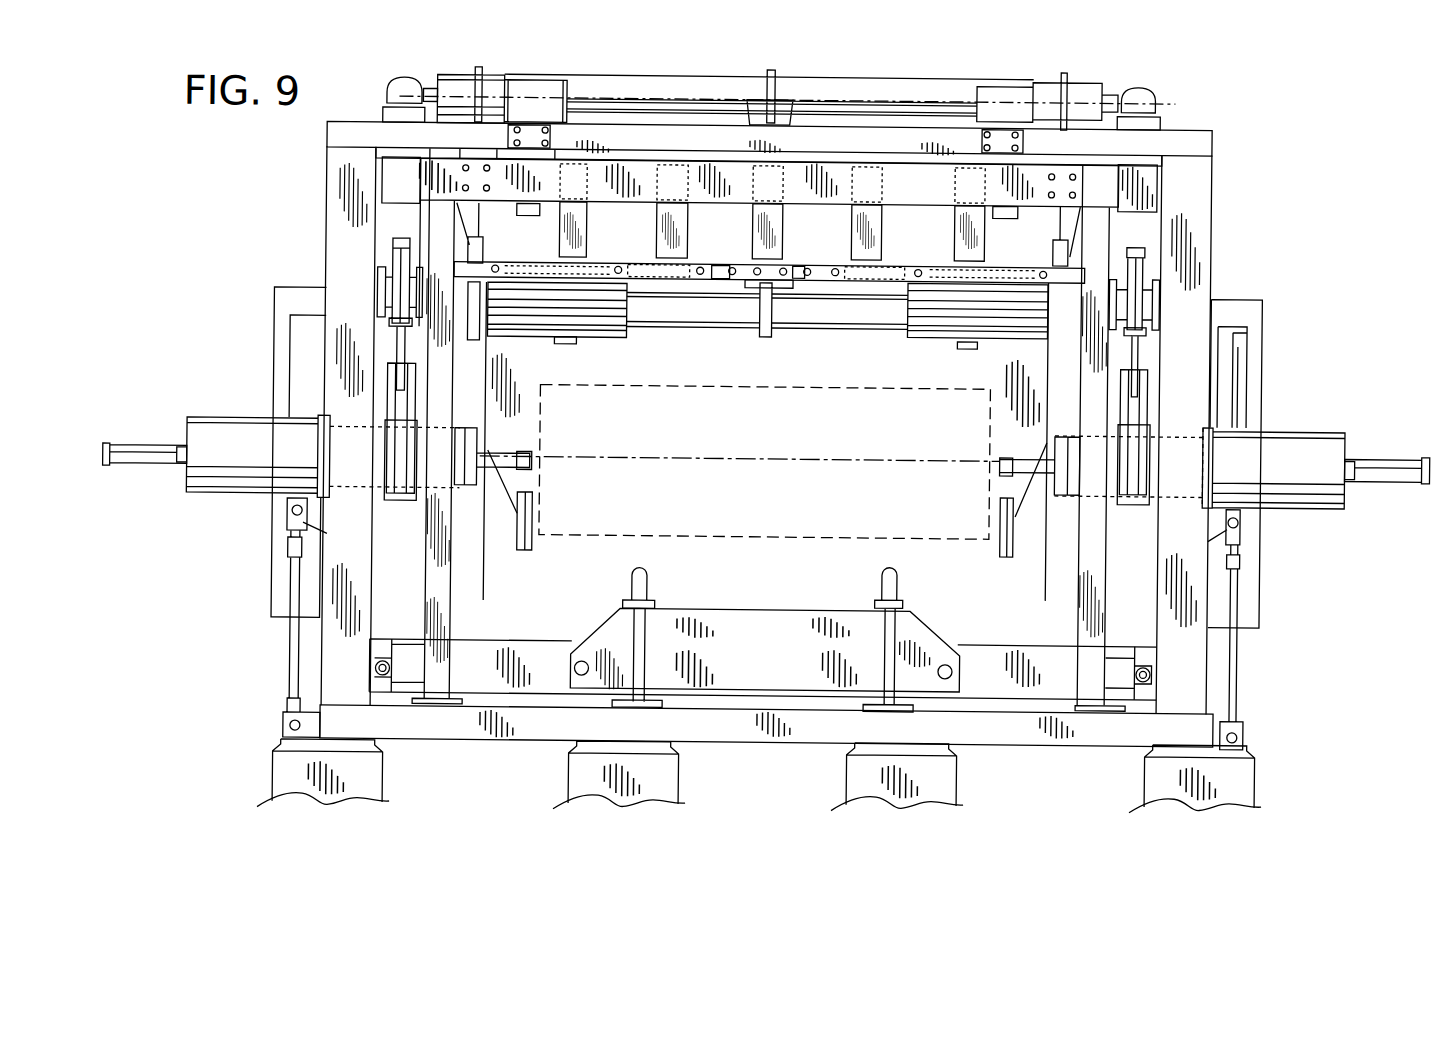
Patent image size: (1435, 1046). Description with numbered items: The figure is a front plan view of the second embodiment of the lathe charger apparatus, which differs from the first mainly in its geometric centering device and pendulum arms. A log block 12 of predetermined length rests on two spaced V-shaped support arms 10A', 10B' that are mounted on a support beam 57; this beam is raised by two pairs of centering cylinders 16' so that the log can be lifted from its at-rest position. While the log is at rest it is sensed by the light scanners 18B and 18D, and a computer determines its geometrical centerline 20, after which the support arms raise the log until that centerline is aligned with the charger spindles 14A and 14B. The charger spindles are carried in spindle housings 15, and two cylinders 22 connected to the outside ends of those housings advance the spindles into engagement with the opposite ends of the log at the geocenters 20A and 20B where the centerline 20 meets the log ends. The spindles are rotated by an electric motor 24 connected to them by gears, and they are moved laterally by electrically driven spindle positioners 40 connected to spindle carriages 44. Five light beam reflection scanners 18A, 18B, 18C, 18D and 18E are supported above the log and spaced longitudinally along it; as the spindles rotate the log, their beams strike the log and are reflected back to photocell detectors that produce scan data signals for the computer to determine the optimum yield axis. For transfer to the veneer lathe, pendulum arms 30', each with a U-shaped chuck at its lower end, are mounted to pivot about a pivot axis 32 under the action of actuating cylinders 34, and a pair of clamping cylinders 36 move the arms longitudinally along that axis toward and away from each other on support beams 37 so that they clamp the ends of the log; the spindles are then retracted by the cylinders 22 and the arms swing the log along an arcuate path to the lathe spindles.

The V-shaped support arm 10A' is at (677, 637).
The V-shaped support arm 10B' is at (857, 639).
The log block 12 is at (704, 380).
The charger spindle 14A is at (487, 453).
The charger spindle 14B is at (1050, 457).
The spindle housing 15 is at (228, 423).
The centering cylinder 16' is at (765, 624).
The light beam reflection scanner 18A is at (618, 234).
The light beam reflection scanner 18B is at (715, 233).
The light beam reflection scanner 18C is at (811, 232).
The light beam reflection scanner 18D is at (871, 221).
The light beam reflection scanner 18E is at (956, 220).
The geometrical centerline 20 is at (710, 456).
The geocenter 20A is at (543, 466).
The geocenter 20B is at (990, 462).
The cylinder 22 is at (140, 450).
The electric motor 24 is at (292, 370).
The pendulum arm 30' is at (765, 441).
The pivot axis 32 is at (486, 88).
The actuating cylinder 34 is at (479, 223).
The clamping cylinder 36 is at (657, 286).
The support beam 37 is at (654, 323).
The spindle positioner 40 is at (390, 269).
The spindle carriage 44 is at (394, 497).
The support beam 57 is at (529, 643).